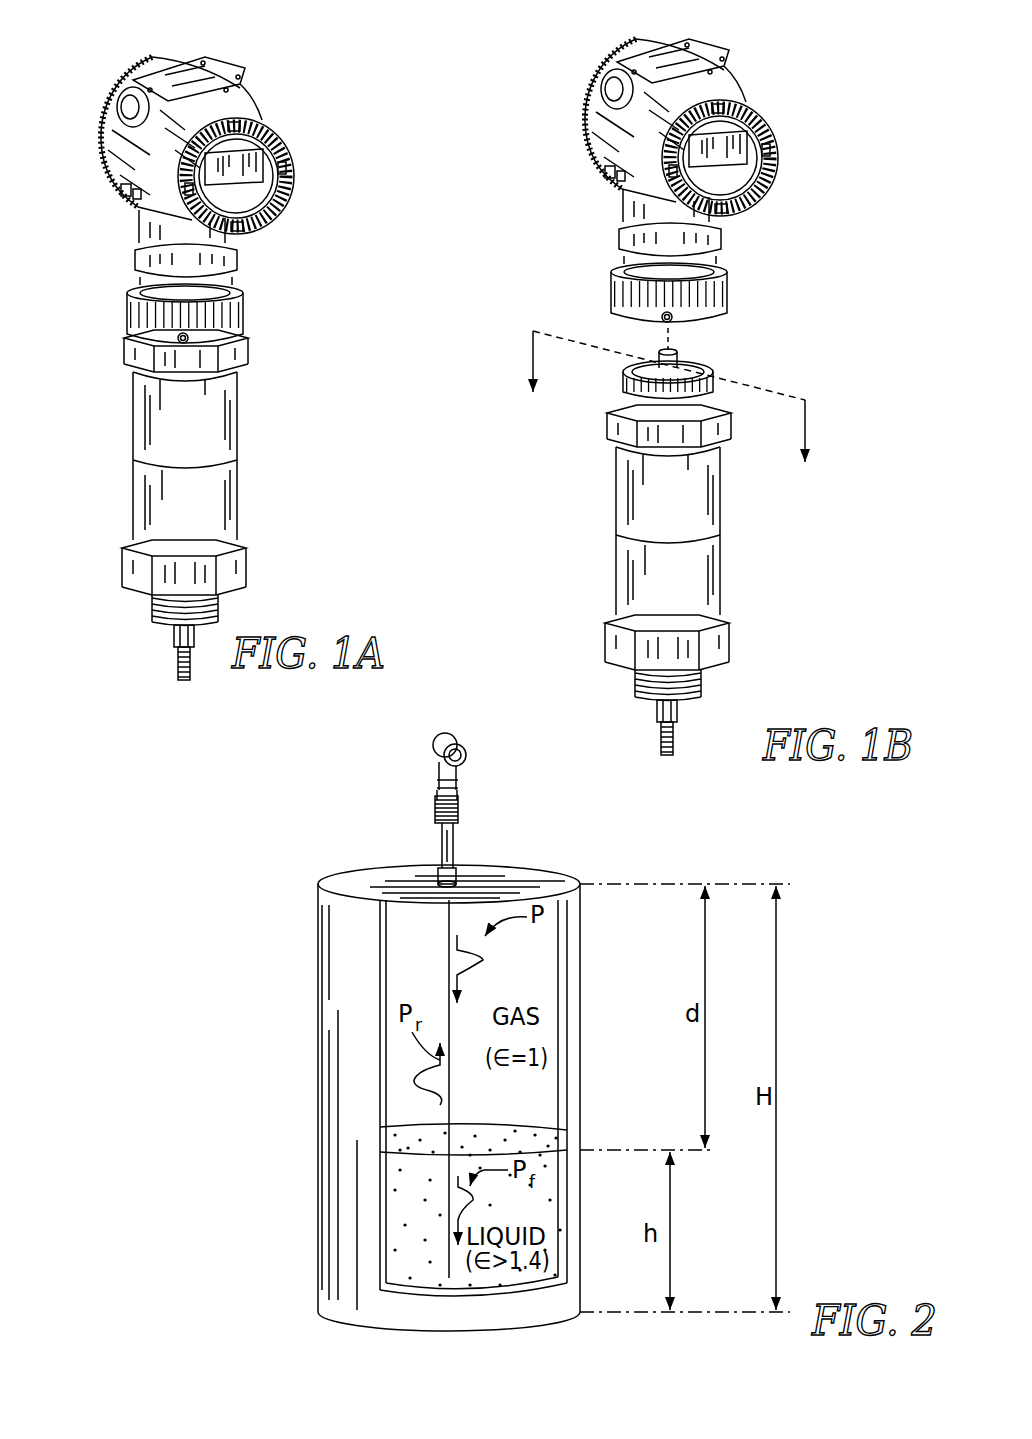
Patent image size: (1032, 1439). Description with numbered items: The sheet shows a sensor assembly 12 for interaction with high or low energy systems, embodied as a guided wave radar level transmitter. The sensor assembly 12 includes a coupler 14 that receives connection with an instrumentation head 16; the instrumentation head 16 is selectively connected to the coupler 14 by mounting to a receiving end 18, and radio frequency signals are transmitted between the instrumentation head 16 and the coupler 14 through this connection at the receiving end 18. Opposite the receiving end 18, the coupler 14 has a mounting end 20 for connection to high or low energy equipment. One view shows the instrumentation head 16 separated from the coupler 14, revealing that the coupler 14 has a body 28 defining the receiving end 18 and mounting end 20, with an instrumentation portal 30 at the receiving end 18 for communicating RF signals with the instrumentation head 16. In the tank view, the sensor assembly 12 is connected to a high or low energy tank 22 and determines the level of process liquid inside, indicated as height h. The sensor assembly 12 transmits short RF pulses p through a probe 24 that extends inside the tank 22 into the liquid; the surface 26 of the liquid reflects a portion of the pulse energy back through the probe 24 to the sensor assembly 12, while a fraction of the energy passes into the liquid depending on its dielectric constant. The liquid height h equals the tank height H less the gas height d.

In FIG. 1A, the sensor assembly 12 is at (60, 96).
In FIG. 1B, the sensor assembly 12 is at (537, 96).
In FIG. 2, the sensor assembly 12 is at (406, 778).
In FIG. 1A, the coupler 14 is at (126, 426).
In FIG. 1B, the coupler 14 is at (606, 507).
In FIG. 2, the coupler 14 is at (436, 842).
In FIG. 1A, the instrumentation head 16 is at (108, 182).
In FIG. 1B, the instrumentation head 16 is at (592, 162).
In FIG. 2, the instrumentation head 16 is at (474, 742).
In FIG. 1A, the receiving end 18 is at (265, 328).
In FIG. 1B, the receiving end 18 is at (775, 338).
In FIG. 2, the receiving end 18 is at (475, 806).
In FIG. 1A, the mounting end 20 is at (248, 585).
In FIG. 1B, the mounting end 20 is at (735, 665).
In FIG. 2, the mounting end 20 is at (466, 853).
In FIG. 2, the tank 22 is at (586, 908).
In FIG. 2, the probe 24 is at (446, 943).
In FIG. 2, the surface 26 is at (527, 1128).
In FIG. 1A, the body 28 is at (228, 420).
In FIG. 1B, the body 28 is at (706, 505).
In FIG. 1B, the instrumentation portal 30 is at (678, 358).